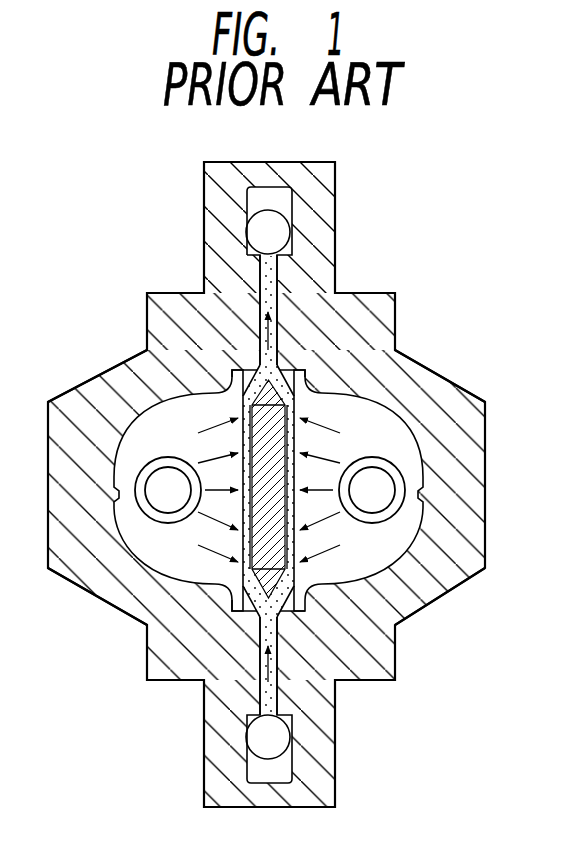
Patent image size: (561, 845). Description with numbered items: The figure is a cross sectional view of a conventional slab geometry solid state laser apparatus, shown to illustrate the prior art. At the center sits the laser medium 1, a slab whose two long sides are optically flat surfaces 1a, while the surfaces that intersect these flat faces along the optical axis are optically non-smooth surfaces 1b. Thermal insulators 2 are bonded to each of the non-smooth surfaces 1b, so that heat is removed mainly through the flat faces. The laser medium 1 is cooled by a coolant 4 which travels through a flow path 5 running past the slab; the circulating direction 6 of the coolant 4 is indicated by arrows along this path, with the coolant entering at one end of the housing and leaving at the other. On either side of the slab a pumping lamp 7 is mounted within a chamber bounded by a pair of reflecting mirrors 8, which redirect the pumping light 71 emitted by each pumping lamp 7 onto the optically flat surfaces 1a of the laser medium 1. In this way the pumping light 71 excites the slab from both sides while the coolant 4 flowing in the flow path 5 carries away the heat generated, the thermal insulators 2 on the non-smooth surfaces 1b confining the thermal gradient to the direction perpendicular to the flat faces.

The laser medium 1 is at (330, 592).
The optically flat surfaces 1a is at (240, 468).
The optically non-smooth surfaces 1b is at (308, 390).
The thermal insulators 2 is at (306, 373).
The coolant 4 is at (262, 630).
The flow path 5 is at (172, 345).
The circulating direction of the coolant 6 is at (258, 310).
The pumping lamp 7 is at (153, 508).
The pumping light 71 is at (215, 540).
The pair of reflecting mirrors 8 is at (137, 436).